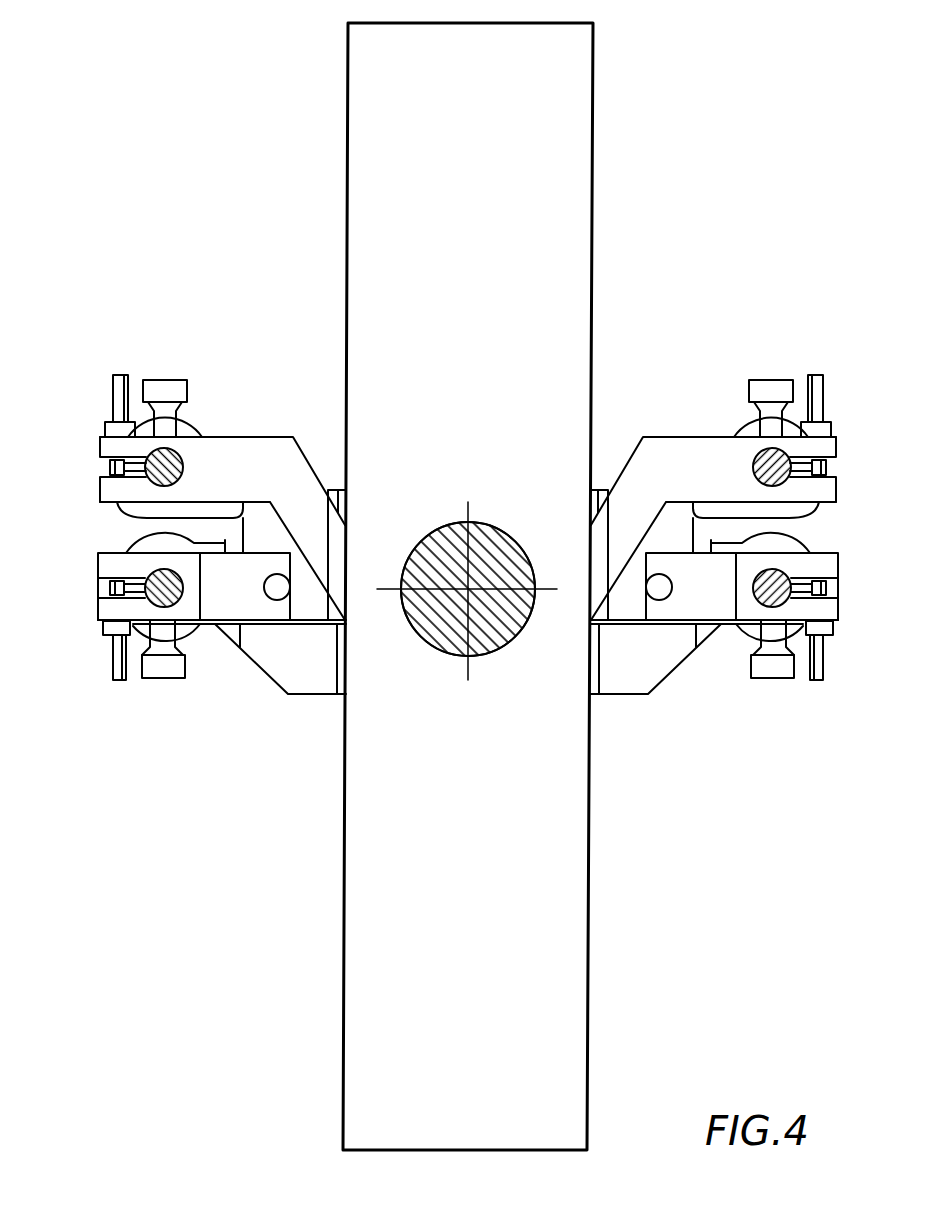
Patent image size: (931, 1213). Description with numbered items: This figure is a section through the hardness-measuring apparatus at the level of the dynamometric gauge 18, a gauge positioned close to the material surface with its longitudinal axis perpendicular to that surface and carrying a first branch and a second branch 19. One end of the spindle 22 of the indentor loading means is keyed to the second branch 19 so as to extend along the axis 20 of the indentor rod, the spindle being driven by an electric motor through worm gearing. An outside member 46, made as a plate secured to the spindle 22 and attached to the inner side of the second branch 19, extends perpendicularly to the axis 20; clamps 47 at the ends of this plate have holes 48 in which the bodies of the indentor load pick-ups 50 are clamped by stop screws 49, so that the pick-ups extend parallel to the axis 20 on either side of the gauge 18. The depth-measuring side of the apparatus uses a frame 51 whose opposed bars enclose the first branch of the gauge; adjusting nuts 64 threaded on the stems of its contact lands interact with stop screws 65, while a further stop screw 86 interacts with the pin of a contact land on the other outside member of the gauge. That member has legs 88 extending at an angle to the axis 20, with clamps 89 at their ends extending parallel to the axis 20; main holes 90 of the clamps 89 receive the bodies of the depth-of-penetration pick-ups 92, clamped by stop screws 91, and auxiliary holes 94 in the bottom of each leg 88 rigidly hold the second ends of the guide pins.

The dynamometric gauge 18 is at (510, 586).
The second branch 19 is at (603, 185).
The axis 20 is at (470, 587).
The spindle 22 is at (424, 560).
The outside member 46 is at (466, 532).
The clamps 47 is at (115, 445).
The holes 48 is at (146, 485).
The locating pin 49 is at (122, 375).
The indentor load pick-ups 50 is at (112, 466).
The frame 51 is at (647, 663).
The adjusting nuts 64 is at (190, 632).
The stop screws 65 is at (160, 674).
The stop screw 86 is at (165, 390).
The legs 88 is at (465, 641).
The clamps 89 is at (105, 610).
The main holes 90 is at (110, 590).
The stop screws 91 is at (118, 682).
The pick-ups 92 is at (152, 578).
The auxiliary holes 94 is at (276, 600).